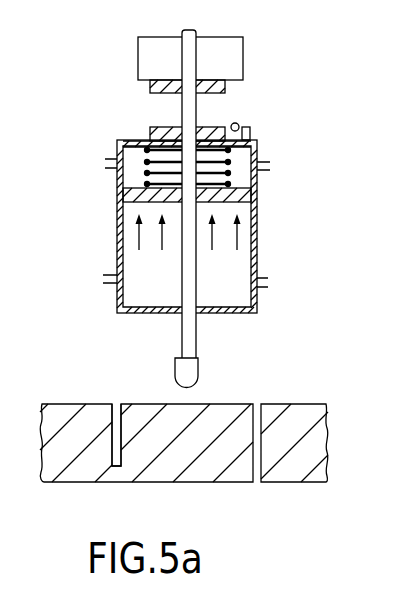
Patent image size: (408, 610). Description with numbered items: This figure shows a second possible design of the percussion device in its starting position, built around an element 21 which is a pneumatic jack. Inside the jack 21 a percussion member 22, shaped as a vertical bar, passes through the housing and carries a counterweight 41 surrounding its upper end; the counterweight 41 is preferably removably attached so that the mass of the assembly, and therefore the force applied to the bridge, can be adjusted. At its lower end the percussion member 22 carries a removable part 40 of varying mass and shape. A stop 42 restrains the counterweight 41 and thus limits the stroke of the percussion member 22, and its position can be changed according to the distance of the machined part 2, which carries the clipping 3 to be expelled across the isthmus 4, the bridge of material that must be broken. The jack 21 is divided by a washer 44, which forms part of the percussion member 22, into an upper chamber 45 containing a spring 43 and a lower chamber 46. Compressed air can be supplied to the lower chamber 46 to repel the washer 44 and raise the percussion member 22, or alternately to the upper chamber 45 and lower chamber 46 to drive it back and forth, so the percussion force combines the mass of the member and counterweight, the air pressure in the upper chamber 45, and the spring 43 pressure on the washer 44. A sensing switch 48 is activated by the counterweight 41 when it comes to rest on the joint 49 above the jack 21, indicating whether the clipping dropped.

The counterweight 41 is at (150, 60).
The stop 42 is at (226, 94).
The joint 49 is at (152, 136).
The sensing switch 48 is at (252, 134).
The element 21 is at (118, 250).
The washer 44 is at (253, 196).
The spring 43 is at (146, 173).
The upper chamber 45 is at (243, 177).
The lower chamber 46 is at (236, 266).
The percussion member 22 is at (182, 355).
The removable part 40 is at (190, 370).
The clipping 3 is at (174, 458).
The isthmus 4 is at (113, 472).
The machined part 2 is at (280, 468).